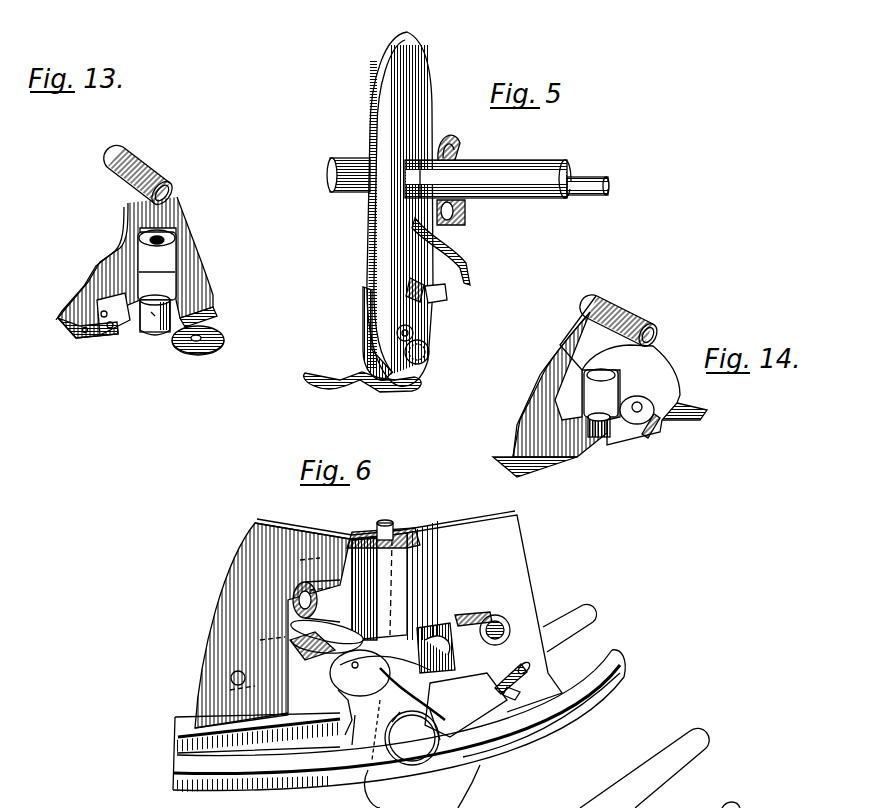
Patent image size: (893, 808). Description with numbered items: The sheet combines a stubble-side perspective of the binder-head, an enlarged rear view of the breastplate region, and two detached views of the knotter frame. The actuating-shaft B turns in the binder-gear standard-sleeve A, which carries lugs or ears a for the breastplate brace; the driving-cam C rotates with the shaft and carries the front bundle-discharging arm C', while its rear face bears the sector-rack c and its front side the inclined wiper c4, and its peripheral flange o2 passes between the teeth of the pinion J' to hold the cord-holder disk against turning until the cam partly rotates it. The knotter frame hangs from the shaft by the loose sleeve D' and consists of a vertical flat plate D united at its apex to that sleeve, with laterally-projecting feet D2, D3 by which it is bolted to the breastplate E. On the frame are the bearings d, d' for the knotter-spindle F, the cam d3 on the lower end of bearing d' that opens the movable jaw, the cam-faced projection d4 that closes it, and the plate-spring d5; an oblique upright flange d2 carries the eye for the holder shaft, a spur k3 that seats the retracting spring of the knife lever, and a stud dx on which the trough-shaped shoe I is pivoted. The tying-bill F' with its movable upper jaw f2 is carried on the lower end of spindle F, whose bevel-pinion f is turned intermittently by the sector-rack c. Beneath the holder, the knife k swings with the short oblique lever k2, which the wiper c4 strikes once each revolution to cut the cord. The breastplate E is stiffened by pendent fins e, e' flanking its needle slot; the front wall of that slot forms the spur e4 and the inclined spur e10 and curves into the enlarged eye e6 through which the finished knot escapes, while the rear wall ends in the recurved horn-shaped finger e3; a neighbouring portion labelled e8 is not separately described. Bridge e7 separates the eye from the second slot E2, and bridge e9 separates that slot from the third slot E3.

In FIG. 13, the loose sleeve D' is at (140, 172).
In FIG. 14, the loose sleeve D' is at (620, 318).
In FIG. 13, the vertical flat plate D is at (134, 267).
In FIG. 5, the vertical flat plate D is at (364, 329).
In FIG. 14, the vertical flat plate D is at (596, 376).
In FIG. 6, the vertical flat plate D is at (378, 619).
In FIG. 13, the knotter-spindle bearing d is at (157, 265).
In FIG. 14, the knotter-spindle bearing d is at (601, 393).
In FIG. 6, the knotter-spindle bearing d is at (383, 584).
In FIG. 13, the knotter-spindle bearing d' is at (149, 324).
In FIG. 14, the knotter-spindle bearing d' is at (599, 414).
In FIG. 13, the upright flange or lip d2 is at (110, 333).
In FIG. 14, the upright flange or lip d2 is at (633, 418).
In FIG. 13, the cam d3 is at (158, 330).
In FIG. 5, the cam d3 is at (402, 298).
In FIG. 6, the cam d3 is at (340, 624).
In FIG. 13, the cam-faced projection d4 is at (207, 308).
In FIG. 6, the cam-faced projection d4 is at (312, 657).
In FIG. 6, the plate-spring d5 is at (295, 615).
In FIG. 14, the arm or stud dx is at (650, 432).
In FIG. 6, the arm or stud dx is at (515, 672).
In FIG. 13, the spur k3 is at (112, 304).
In FIG. 13, the foot-flange D2 is at (81, 335).
In FIG. 14, the foot-flange D2 is at (693, 410).
In FIG. 13, the foot-flange D3 is at (199, 351).
In FIG. 14, the foot-flange D3 is at (533, 450).
In FIG. 6, the foot-flange D3 is at (190, 718).
In FIG. 5, the principal flange of driving-cam o2 is at (387, 16).
In FIG. 5, the segment-gear or sector-rack c is at (362, 105).
In FIG. 5, the driving-cam C is at (400, 209).
In FIG. 5, the lugs or ears a is at (458, 150).
In FIG. 5, the binder-gear standard-sleeve A is at (449, 168).
In FIG. 5, the actuating-shaft B is at (588, 174).
In FIG. 5, the front bundle-discharging arm C' is at (446, 251).
In FIG. 5, the inclined lug or wiper c4 is at (445, 292).
In FIG. 5, the lever k2 is at (413, 333).
In FIG. 5, the pinion J' is at (436, 353).
In FIG. 6, the pinion J' is at (482, 614).
In FIG. 5, the breastplate E is at (362, 368).
In FIG. 6, the breastplate E is at (236, 751).
In FIG. 5, the bridge e9 is at (408, 390).
In FIG. 6, the bridge e9 is at (510, 695).
In FIG. 6, the spindle F is at (382, 516).
In FIG. 6, the bevel-pinion f is at (361, 673).
In FIG. 6, the upper jaw f2 is at (385, 661).
In FIG. 6, the knotter or tying-bill F' is at (350, 711).
In FIG. 6, the pendent fin or rib e' is at (394, 717).
In FIG. 6, the pendent fin or rib e is at (399, 729).
In FIG. 6, the horn-shaped finger e3 is at (370, 730).
In FIG. 6, the teat or spur e4 is at (344, 733).
In FIG. 6, the eye or loop e6 is at (412, 738).
In FIG. 6, the bridge e7 is at (434, 730).
In FIG. 6, the link e8 is at (412, 694).
In FIG. 6, the inclined projection or spur e10 is at (399, 722).
In FIG. 6, the shoe I is at (460, 688).
In FIG. 6, the knife k is at (436, 648).
In FIG. 6, the second slot E2 is at (515, 715).
In FIG. 6, the third slot E3 is at (626, 706).